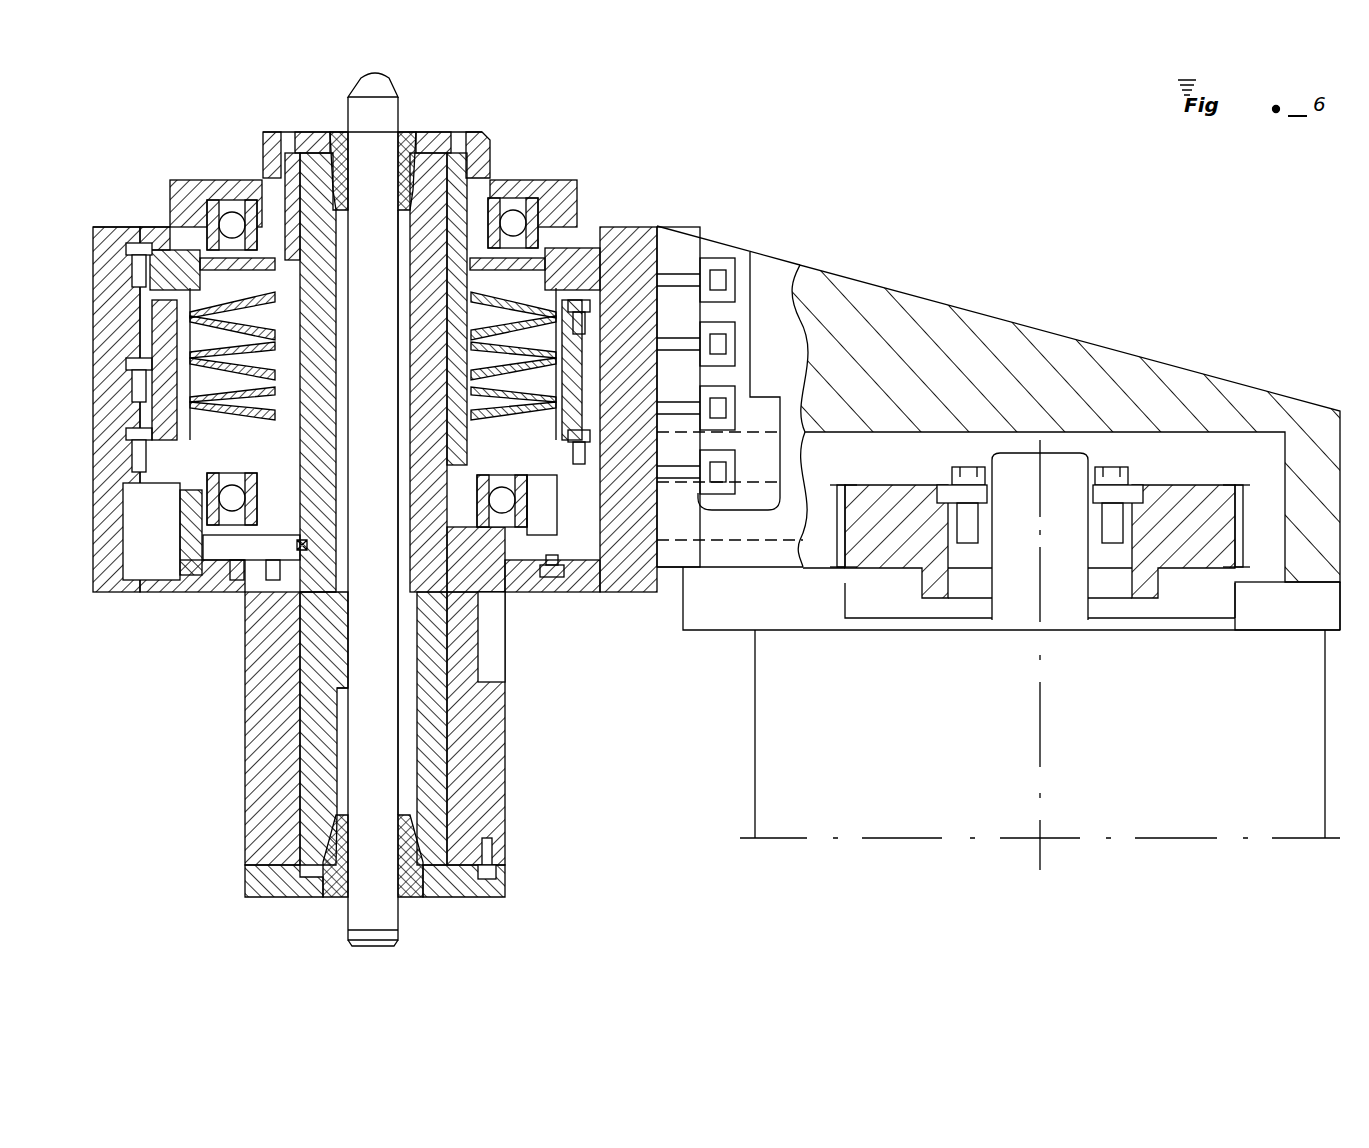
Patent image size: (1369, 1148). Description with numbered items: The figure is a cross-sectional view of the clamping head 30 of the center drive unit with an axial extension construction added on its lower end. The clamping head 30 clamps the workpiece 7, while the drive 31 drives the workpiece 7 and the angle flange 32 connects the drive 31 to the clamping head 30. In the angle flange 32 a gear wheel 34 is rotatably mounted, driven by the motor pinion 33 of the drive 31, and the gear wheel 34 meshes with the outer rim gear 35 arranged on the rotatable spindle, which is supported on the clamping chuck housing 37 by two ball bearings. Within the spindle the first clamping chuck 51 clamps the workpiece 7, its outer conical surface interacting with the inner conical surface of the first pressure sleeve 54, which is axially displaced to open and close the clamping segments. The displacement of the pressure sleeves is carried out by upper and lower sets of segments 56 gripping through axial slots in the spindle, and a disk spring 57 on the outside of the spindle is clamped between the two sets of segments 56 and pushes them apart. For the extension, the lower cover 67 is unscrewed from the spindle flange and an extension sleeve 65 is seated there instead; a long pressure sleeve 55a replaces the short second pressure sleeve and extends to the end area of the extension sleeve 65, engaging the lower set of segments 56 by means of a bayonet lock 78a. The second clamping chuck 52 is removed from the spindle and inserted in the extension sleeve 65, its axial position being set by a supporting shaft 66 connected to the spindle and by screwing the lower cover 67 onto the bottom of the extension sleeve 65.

The workpiece 7 is at (352, 911).
The clamping head 30 is at (598, 123).
The drive 31 is at (1318, 757).
The angle flange 32 is at (1105, 356).
The motor pinion 33 is at (1186, 486).
The gear wheel 34 is at (808, 492).
The outer rim gear 35 is at (522, 512).
The clamping chuck housing 37 is at (570, 242).
The first clamping chuck 51 is at (404, 124).
The second clamping chuck 52 is at (409, 898).
The first pressure sleeve 54 is at (470, 150).
The long pressure sleeve 55a is at (312, 820).
The segments 56 is at (460, 440).
The disk spring 57 is at (112, 300).
The extension sleeve 65 is at (245, 763).
The supporting shaft 66 is at (340, 642).
The lower cover 67 is at (262, 898).
The bayonet lock 78a is at (300, 425).